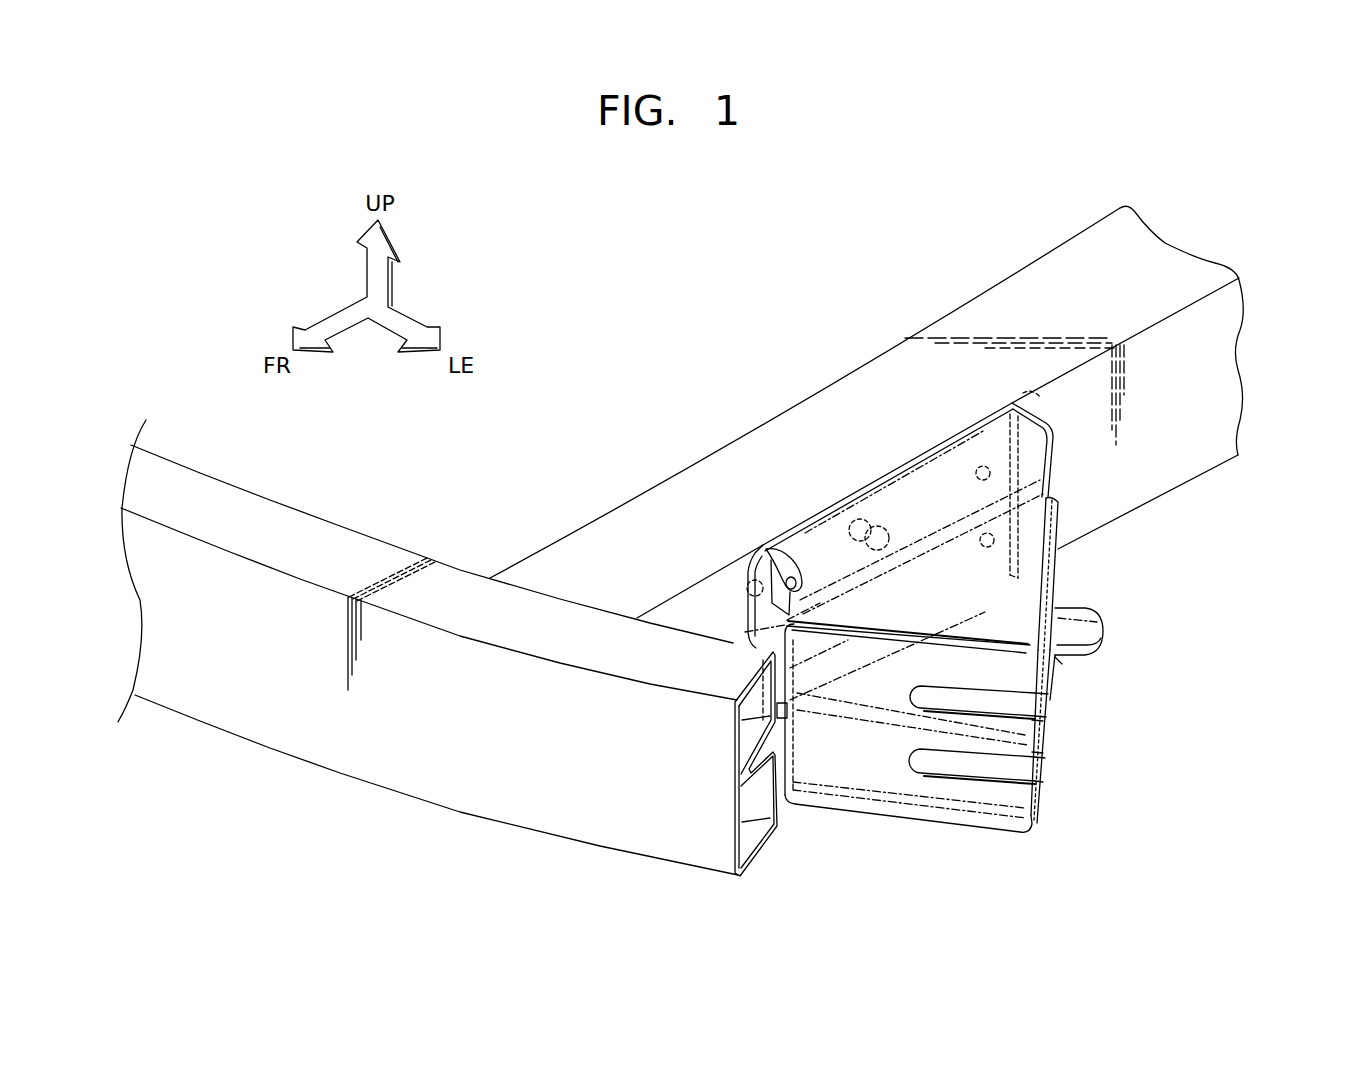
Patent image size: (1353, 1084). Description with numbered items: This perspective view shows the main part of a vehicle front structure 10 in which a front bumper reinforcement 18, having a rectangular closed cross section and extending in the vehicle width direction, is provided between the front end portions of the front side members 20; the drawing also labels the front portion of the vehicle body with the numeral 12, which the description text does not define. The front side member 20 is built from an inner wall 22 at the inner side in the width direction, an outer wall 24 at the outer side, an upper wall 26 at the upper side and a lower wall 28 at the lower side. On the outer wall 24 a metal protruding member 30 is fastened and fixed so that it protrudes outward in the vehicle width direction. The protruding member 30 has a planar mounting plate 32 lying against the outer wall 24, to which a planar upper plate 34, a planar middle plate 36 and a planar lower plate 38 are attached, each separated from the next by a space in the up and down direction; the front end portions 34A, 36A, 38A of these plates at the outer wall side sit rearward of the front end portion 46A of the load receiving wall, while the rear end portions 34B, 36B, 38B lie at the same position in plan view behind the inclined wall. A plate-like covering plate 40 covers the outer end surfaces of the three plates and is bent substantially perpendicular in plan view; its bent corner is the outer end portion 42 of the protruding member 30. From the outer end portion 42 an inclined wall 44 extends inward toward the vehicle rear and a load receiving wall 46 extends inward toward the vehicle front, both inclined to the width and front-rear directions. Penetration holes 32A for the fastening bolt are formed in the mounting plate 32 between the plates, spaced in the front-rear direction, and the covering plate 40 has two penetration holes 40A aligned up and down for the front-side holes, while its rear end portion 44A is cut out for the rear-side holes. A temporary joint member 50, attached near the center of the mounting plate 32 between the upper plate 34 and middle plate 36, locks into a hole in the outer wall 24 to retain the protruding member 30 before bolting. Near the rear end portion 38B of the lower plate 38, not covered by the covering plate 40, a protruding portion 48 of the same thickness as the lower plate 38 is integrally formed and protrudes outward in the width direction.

The vehicle front structure 10 is at (1178, 834).
The bumper reinforcement 12 is at (263, 752).
The front bumper reinforcement 18 is at (277, 503).
The front side member 20 is at (745, 422).
The inner wall 22 is at (655, 483).
The outer wall 24 is at (1130, 493).
The upper wall 26 is at (1072, 270).
The lower wall 28 is at (1193, 472).
The protruding member 30 is at (1028, 835).
The mounting plate 32 is at (748, 595).
The penetration hole 32A is at (990, 458).
The upper plate 34 is at (1040, 457).
The front end portion of the upper plate 34A is at (778, 543).
The rear end portion of the upper plate 34B is at (1040, 418).
The middle plate 36 is at (860, 764).
The front end portion of the middle plate 36A is at (909, 615).
The rear end portion of the middle plate 36B is at (1060, 500).
The lower plate 38 is at (868, 765).
The front end portion of the lower plate 38A is at (908, 656).
The rear end portion of the lower plate 38B is at (1050, 575).
The covering plate 40 is at (952, 792).
The penetration hole 40A is at (1046, 720).
The outer end portion 42 is at (1052, 765).
The inclined wall 44 is at (1058, 703).
The rear end portion of the covering plate 44A is at (1058, 663).
The load receiving wall 46 is at (900, 748).
The front end portion of the load receiving wall 46A is at (745, 634).
The protruding portion 48 is at (1100, 623).
The temporary joint member 50 is at (883, 500).